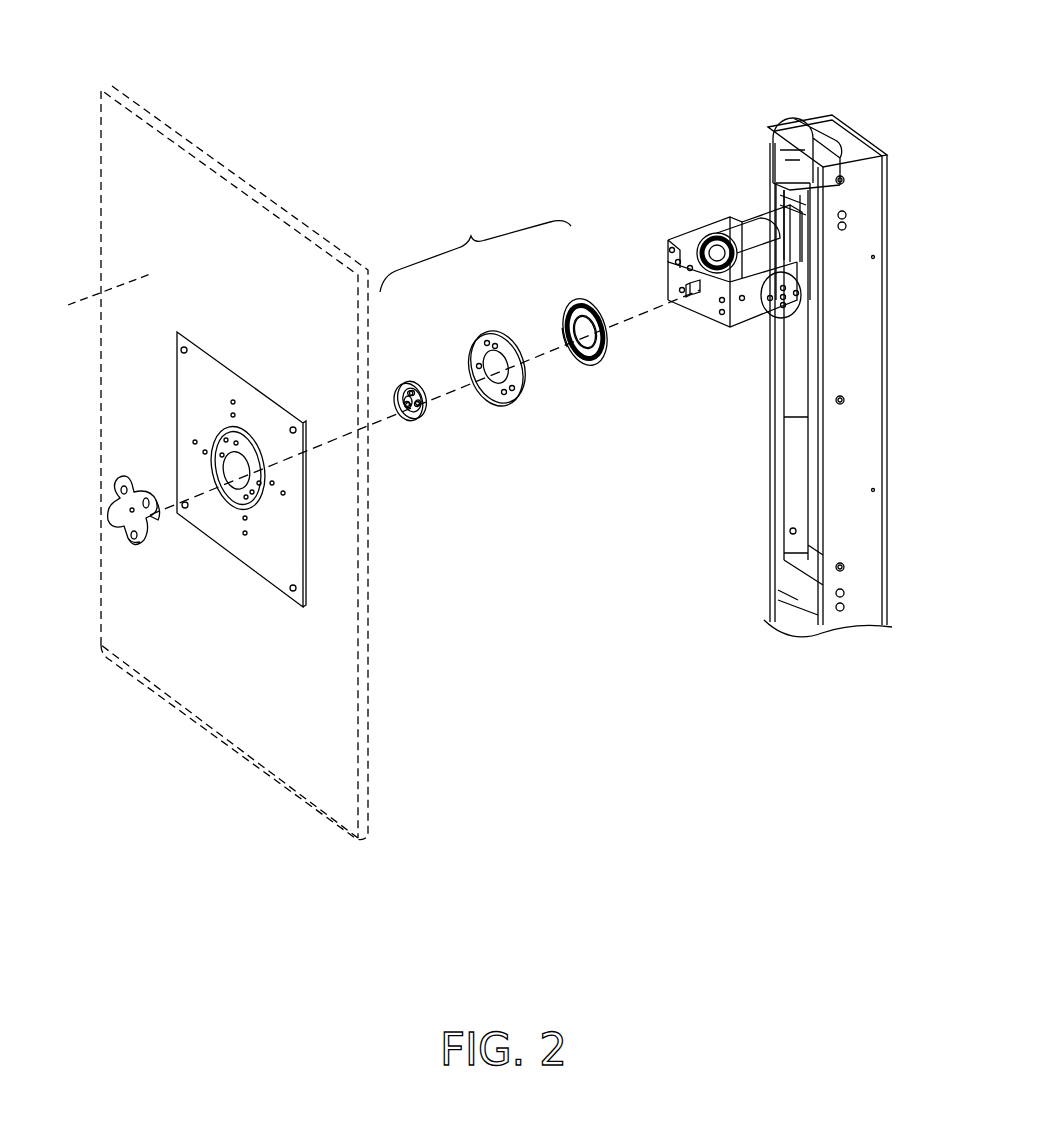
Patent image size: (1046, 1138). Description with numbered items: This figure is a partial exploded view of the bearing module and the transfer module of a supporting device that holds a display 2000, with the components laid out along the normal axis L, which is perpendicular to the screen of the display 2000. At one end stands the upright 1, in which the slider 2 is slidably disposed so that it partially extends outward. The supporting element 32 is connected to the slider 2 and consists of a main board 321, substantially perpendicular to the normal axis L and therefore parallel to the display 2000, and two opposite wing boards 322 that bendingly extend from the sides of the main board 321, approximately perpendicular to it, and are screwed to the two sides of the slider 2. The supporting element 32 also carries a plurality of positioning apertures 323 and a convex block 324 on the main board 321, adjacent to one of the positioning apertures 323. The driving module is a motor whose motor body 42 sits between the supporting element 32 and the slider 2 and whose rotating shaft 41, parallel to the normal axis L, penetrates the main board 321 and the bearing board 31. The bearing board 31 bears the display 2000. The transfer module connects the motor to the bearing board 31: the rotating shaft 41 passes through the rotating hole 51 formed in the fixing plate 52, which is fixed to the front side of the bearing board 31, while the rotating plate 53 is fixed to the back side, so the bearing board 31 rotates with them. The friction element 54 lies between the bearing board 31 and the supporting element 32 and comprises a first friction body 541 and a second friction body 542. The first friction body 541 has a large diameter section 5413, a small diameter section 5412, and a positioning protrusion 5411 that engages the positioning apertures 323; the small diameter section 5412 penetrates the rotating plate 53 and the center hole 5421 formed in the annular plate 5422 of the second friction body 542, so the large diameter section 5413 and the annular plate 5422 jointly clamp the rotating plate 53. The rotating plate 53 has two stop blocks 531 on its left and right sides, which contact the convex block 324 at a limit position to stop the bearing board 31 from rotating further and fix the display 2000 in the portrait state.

The upright 1 is at (887, 360).
The slider 2 is at (746, 273).
The supporting element 32 is at (703, 208).
The main board 321 is at (704, 330).
The wing boards 322 is at (680, 242).
The positioning apertures 323 is at (678, 272).
The convex block 324 is at (668, 258).
The rotating shaft 41 is at (686, 300).
The motor body 42 is at (720, 240).
The bearing board 31 is at (254, 388).
The rotating hole 51 is at (118, 517).
The fixing plate 52 is at (140, 545).
The rotating plate 53 is at (509, 405).
The stop block 531 is at (484, 344).
The friction element 54 is at (475, 249).
The first friction body 541 is at (408, 383).
The positioning protrusion 5411 is at (420, 392).
The small diameter section 5412 is at (414, 412).
The large diameter section 5413 is at (406, 416).
The second friction body 542 is at (578, 300).
The center hole 5421 is at (564, 320).
The annular plate 5422 is at (586, 366).
The display 2000 is at (238, 192).
The normal axis L is at (375, 394).